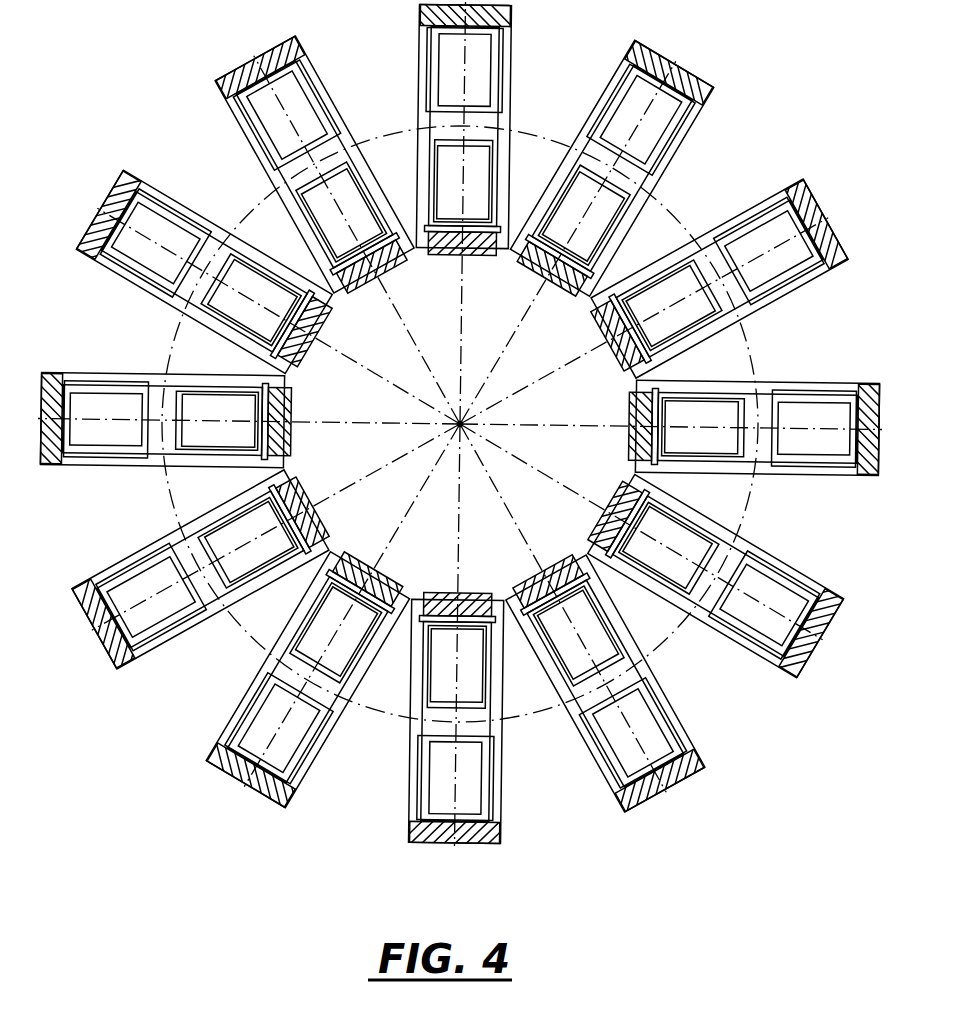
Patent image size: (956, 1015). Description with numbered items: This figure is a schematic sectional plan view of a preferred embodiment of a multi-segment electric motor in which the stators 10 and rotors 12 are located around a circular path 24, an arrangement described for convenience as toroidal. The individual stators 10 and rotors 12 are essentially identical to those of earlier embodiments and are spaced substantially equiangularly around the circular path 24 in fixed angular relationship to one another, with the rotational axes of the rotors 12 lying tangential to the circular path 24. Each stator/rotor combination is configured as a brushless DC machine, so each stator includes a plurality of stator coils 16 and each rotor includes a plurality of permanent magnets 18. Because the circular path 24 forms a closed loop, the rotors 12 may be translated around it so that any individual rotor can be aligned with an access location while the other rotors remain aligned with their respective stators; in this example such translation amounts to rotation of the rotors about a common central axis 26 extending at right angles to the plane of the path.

The stator 10 is at (437, 833).
The rotor 12 is at (478, 730).
The stator coil 16 is at (470, 600).
The permanent magnet 18 is at (472, 663).
The circular path 24 is at (680, 632).
The central axis 26 is at (462, 426).